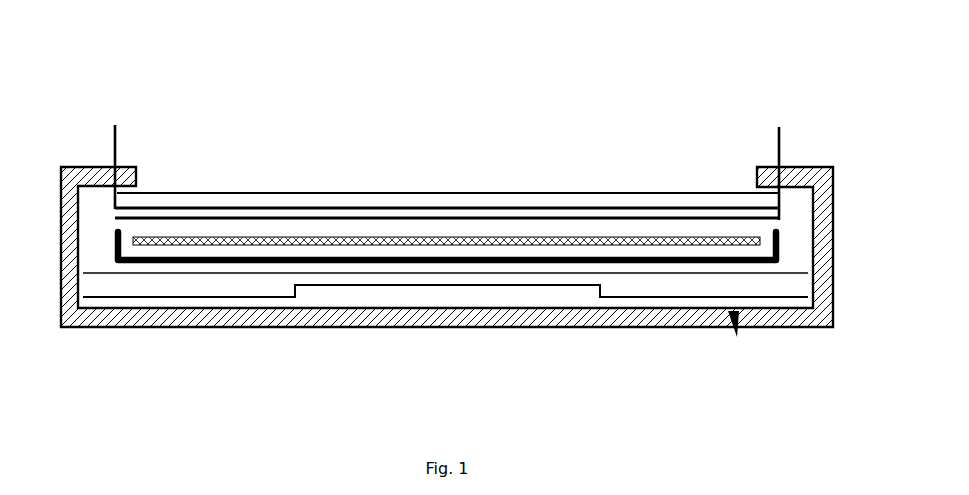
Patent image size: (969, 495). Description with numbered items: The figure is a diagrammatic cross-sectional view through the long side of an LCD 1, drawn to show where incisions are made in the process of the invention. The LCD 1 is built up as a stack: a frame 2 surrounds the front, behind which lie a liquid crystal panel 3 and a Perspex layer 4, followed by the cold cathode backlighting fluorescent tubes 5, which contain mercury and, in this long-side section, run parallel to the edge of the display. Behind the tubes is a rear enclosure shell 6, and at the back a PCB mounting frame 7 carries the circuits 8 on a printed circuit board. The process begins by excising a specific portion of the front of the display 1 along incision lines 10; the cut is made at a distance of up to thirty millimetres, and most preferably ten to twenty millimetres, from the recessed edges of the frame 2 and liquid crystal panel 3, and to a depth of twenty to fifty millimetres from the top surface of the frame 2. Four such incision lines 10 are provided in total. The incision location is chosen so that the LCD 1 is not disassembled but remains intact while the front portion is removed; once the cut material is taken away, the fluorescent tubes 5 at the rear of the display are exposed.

The LCD 1 is at (159, 52).
The frame 2 is at (774, 338).
The liquid crystal panel 3 is at (586, 192).
The Perspex layer 4 is at (201, 209).
The cold cathode backlighting fluorescent tubes 5 is at (307, 236).
The rear enclosure shell 6 is at (240, 265).
The PCB mounting frame 7 is at (688, 275).
The circuits on a PCB 8 is at (572, 286).
The incision lines 10 is at (114, 140).